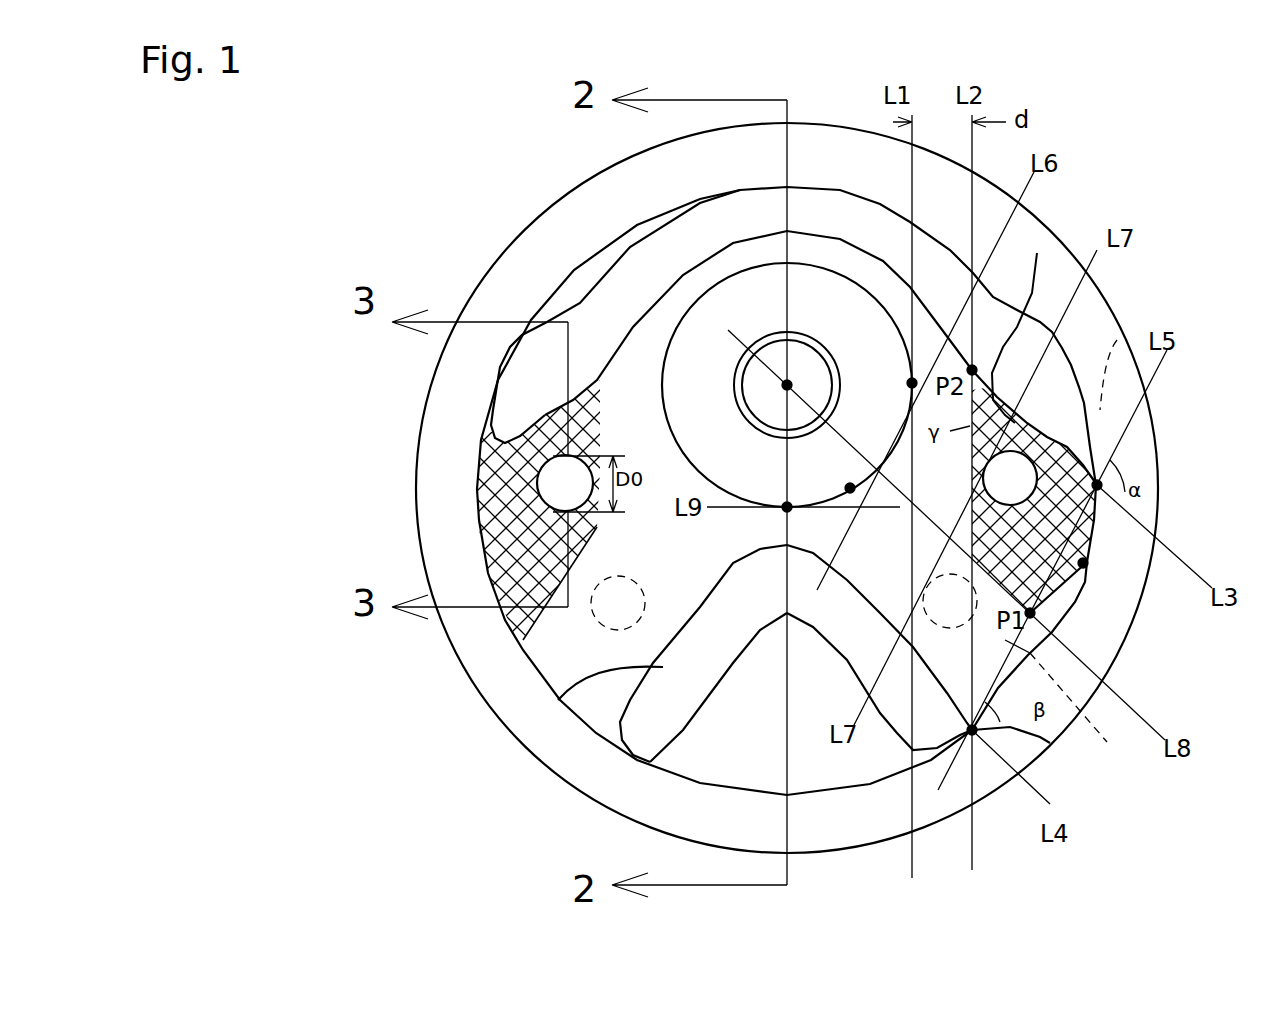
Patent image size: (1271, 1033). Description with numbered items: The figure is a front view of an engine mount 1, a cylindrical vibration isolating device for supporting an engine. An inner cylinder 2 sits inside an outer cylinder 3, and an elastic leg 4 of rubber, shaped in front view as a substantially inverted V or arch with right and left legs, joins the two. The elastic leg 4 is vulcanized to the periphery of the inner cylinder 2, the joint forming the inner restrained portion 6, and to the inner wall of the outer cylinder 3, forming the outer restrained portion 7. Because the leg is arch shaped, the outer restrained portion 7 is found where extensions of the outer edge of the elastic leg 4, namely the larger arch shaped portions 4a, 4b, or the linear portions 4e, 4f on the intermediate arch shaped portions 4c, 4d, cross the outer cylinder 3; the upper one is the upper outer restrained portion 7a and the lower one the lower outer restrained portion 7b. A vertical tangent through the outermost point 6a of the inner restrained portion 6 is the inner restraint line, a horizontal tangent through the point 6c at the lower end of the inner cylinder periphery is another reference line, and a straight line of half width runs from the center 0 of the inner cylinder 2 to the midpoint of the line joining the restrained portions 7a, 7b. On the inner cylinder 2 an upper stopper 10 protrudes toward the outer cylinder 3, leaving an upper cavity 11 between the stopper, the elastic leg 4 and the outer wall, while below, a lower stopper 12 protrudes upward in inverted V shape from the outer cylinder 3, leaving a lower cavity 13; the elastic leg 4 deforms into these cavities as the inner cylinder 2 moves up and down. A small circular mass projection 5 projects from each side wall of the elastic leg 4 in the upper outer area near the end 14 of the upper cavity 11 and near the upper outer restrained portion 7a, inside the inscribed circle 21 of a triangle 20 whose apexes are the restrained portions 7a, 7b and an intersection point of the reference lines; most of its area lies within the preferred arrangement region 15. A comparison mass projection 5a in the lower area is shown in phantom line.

The engine mount 1 is at (1131, 165).
The inner cylinder 2 is at (707, 350).
The outer cylinder 3 is at (586, 196).
The elastic leg 4 is at (550, 663).
The arch shaped portion 4a is at (938, 326).
The arch shaped portion 4b is at (768, 560).
The arch shaped portion 4c is at (1083, 453).
The arch shaped portion 4d is at (893, 740).
The linear portion 4e is at (985, 400).
The linear portion 4f is at (872, 596).
The mass projection 5 is at (553, 487).
The mass projection 5a is at (600, 618).
The inner restrained portion 6 is at (787, 429).
The point 6a is at (905, 375).
The point 6c is at (784, 512).
The outer restrained portion 7 is at (1087, 563).
The upper outer restrained portion 7a is at (1112, 472).
The lower outer restrained portion 7b is at (1050, 744).
The upper stopper 10 is at (740, 250).
The upper cavity 11 is at (1017, 327).
The lower stopper 12 is at (745, 695).
The lower cavity 13 is at (558, 700).
The end 14 is at (510, 437).
The preferred arrangement region 15 is at (1152, 543).
The triangle 20 is at (1071, 706).
The inscribed circle 21 is at (983, 478).
The center 0 is at (775, 390).